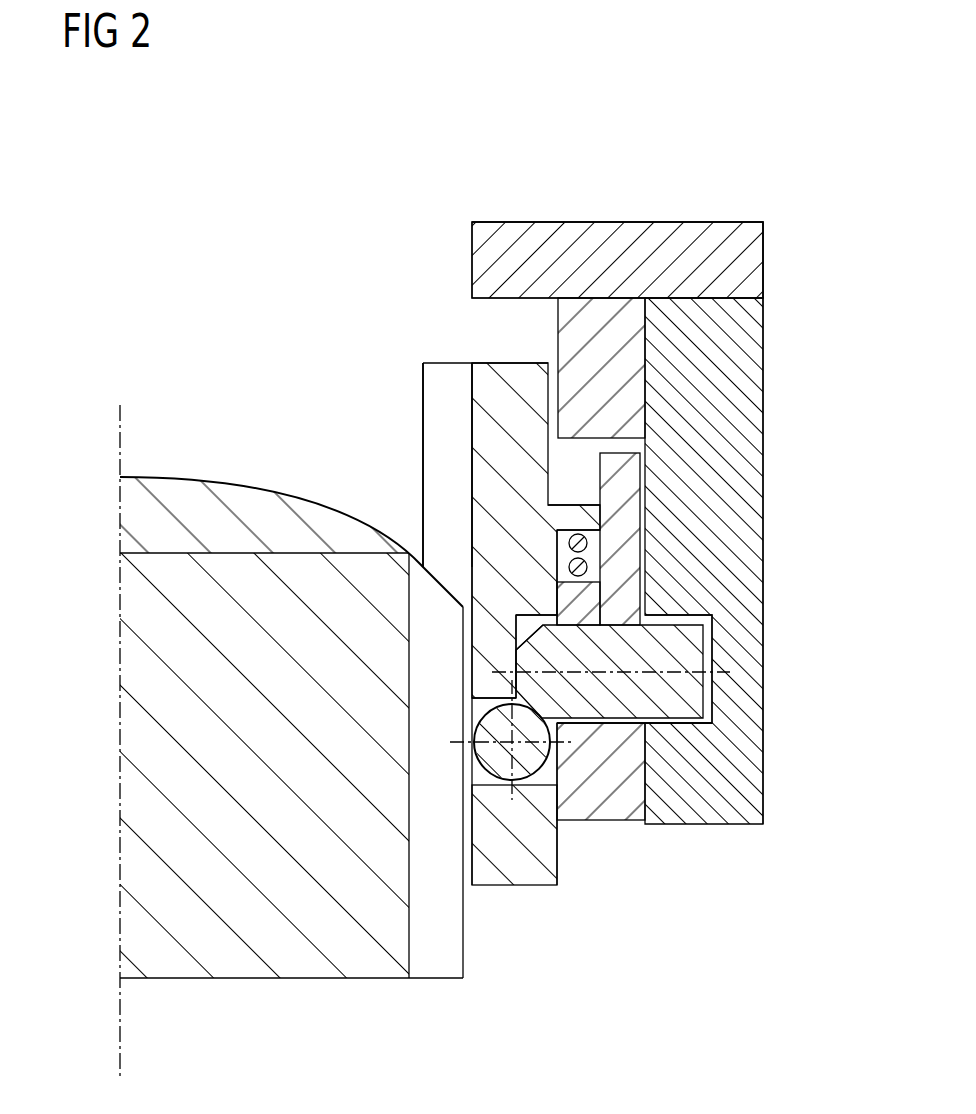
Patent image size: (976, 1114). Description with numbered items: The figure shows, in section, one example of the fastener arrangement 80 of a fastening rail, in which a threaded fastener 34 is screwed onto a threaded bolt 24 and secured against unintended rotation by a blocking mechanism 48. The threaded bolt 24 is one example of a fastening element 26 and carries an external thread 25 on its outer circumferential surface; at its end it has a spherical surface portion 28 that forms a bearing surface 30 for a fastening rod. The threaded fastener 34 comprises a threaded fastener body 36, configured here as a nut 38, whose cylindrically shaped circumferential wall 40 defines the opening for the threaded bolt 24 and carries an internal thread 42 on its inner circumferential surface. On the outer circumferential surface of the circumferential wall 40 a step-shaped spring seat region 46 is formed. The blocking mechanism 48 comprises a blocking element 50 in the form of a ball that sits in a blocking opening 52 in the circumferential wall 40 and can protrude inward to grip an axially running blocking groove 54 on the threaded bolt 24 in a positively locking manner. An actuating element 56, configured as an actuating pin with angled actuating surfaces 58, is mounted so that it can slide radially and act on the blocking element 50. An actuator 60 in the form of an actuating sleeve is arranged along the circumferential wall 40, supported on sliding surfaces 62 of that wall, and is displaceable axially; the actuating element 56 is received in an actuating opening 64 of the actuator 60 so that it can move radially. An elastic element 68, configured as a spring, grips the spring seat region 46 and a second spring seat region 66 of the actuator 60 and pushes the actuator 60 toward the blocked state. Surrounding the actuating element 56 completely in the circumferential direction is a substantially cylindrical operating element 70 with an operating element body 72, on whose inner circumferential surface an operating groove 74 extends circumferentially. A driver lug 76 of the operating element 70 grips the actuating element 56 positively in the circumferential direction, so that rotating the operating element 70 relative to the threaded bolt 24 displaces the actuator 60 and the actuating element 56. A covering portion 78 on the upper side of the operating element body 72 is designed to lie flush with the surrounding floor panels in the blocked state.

The threaded bolt 24 is at (122, 668).
The external thread 25 is at (430, 918).
The fastening element 26 is at (122, 728).
The spherical surface portion 28 is at (150, 487).
The bearing surface 30 is at (200, 480).
The threaded fastener 34 is at (373, 375).
The threaded fastener body 36 is at (433, 422).
The nut 38 is at (472, 363).
The circumferential wall 40 is at (478, 477).
The internal thread 42 is at (442, 552).
The spring seat region 46 is at (567, 517).
The blocking mechanism 48 is at (572, 118).
The blocking element 50 is at (500, 770).
The blocking opening 52 is at (475, 707).
The blocking groove 54 is at (462, 757).
The actuating element 56 is at (687, 700).
The angled actuating surfaces 58 is at (512, 663).
The actuator 60 is at (592, 813).
The sliding surfaces 62 is at (555, 603).
The actuating opening 64 is at (670, 727).
The second spring seat region 66 is at (585, 595).
The elastic element 68 is at (575, 540).
The operating element 70 is at (718, 180).
The operating element body 72 is at (765, 338).
The operating groove 74 is at (708, 652).
The driver lug 76 is at (558, 337).
The covering portion 78 is at (558, 233).
The fastener arrangement 80 is at (218, 153).